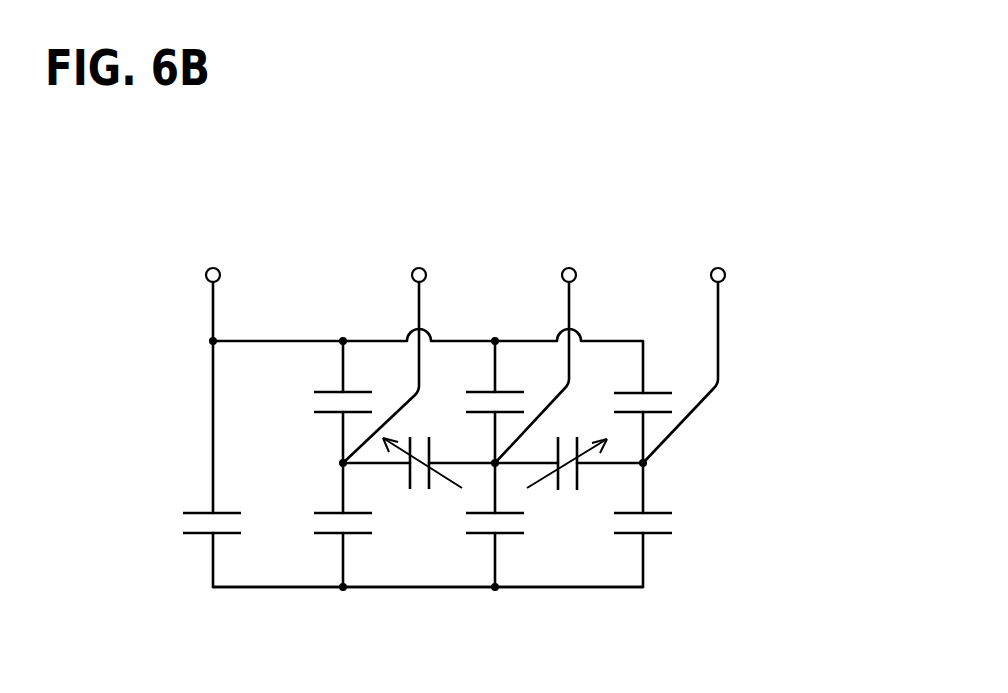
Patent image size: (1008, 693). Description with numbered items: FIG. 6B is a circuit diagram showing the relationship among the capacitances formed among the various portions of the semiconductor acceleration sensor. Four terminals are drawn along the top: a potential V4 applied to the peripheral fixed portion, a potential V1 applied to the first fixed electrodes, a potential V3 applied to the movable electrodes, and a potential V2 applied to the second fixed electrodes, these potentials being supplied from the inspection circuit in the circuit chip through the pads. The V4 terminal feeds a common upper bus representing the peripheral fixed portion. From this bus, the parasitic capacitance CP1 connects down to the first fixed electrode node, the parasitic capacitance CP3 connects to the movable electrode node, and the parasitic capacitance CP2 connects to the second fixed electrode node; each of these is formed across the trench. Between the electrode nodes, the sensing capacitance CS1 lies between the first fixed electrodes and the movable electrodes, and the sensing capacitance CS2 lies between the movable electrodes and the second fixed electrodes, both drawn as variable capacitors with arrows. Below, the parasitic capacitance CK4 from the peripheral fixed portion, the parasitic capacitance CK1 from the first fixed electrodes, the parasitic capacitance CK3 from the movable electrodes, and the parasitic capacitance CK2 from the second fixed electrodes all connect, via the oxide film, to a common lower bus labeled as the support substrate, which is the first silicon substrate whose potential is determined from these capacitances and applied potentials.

The potential applied to the peripheral fixed portion V4 is at (214, 231).
The potential applied to the first fixed electrodes V1 is at (403, 231).
The potential applied to the movable electrodes V3 is at (567, 231).
The potential applied to the second fixed electrodes V2 is at (735, 231).
The parasitic capacitance CP1 is at (356, 384).
The parasitic capacitance CP3 is at (507, 384).
The parasitic capacitance CP2 is at (655, 384).
The capacitance CS1 is at (422, 480).
The capacitance CS2 is at (567, 480).
The parasitic capacitance CK4 is at (224, 543).
The parasitic capacitance CK1 is at (356, 543).
The parasitic capacitance CK3 is at (507, 543).
The parasitic capacitance CK2 is at (655, 543).